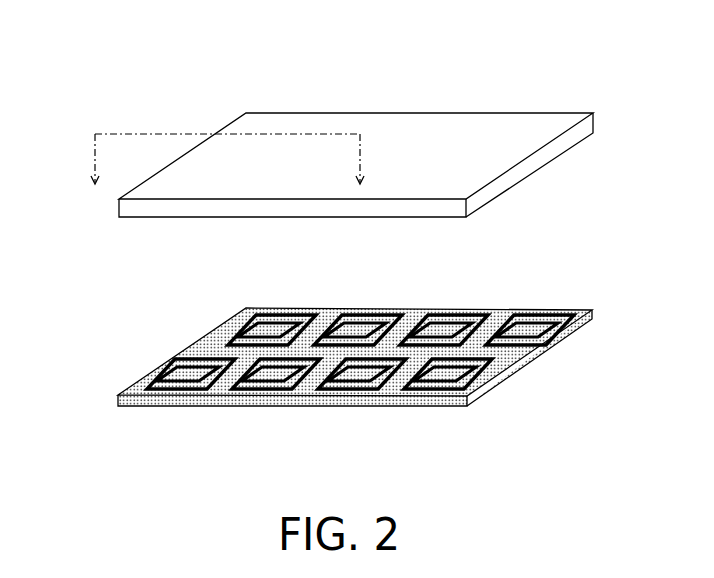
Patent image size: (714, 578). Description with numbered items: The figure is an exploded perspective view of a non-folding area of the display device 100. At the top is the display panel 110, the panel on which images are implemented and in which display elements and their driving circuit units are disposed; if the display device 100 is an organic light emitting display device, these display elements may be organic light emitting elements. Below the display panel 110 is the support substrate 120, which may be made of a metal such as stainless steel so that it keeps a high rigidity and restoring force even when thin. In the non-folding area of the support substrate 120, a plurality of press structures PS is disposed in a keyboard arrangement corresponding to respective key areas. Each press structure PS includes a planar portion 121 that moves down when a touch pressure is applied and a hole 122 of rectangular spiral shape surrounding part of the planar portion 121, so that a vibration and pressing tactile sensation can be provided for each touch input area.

The display device 100 is at (598, 46).
The display panel 110 is at (593, 118).
The support substrate 120 is at (370, 368).
The planar portion 121 is at (119, 404).
The hole 122 is at (163, 370).
The press structure PS is at (58, 362).